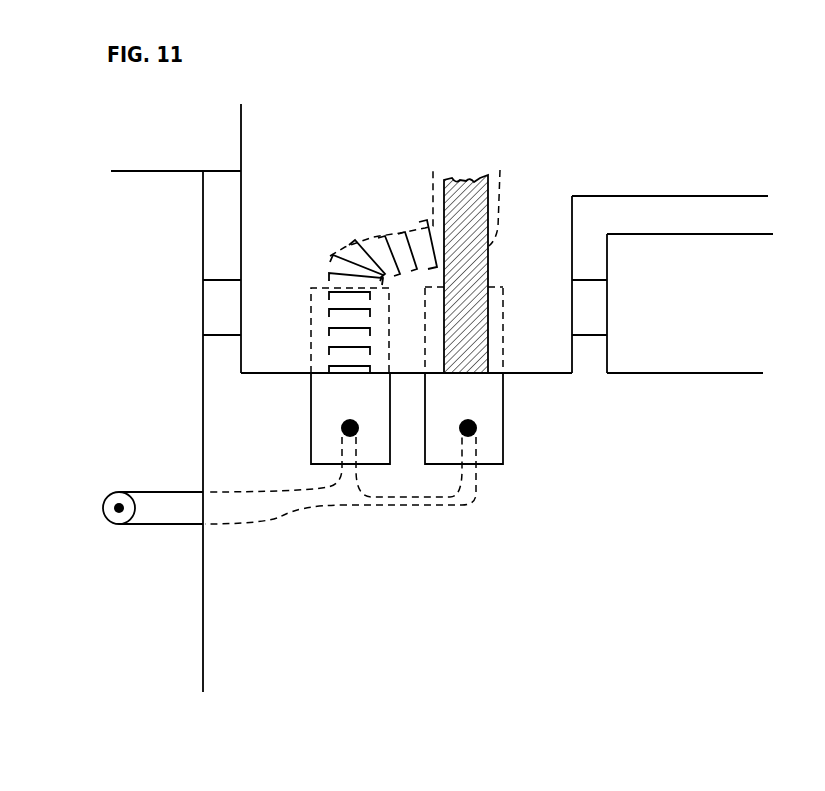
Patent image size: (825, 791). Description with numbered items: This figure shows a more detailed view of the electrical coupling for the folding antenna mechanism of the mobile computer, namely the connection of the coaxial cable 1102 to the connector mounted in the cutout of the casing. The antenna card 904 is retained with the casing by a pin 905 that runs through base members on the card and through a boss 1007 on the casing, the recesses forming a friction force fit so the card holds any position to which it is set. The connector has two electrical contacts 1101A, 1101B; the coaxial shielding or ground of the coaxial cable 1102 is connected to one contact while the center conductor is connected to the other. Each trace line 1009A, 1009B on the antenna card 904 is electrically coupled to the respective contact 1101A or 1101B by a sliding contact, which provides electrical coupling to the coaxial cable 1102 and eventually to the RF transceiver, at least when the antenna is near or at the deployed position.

The antenna card 904 is at (240, 159).
The pin 905 is at (212, 311).
The boss 1007 is at (658, 373).
The trace line 1009A is at (487, 197).
The trace line 1009B is at (374, 235).
The electrical contact 1101A is at (503, 423).
The electrical contact 1101B is at (310, 428).
The coaxial cable 1102 is at (160, 529).